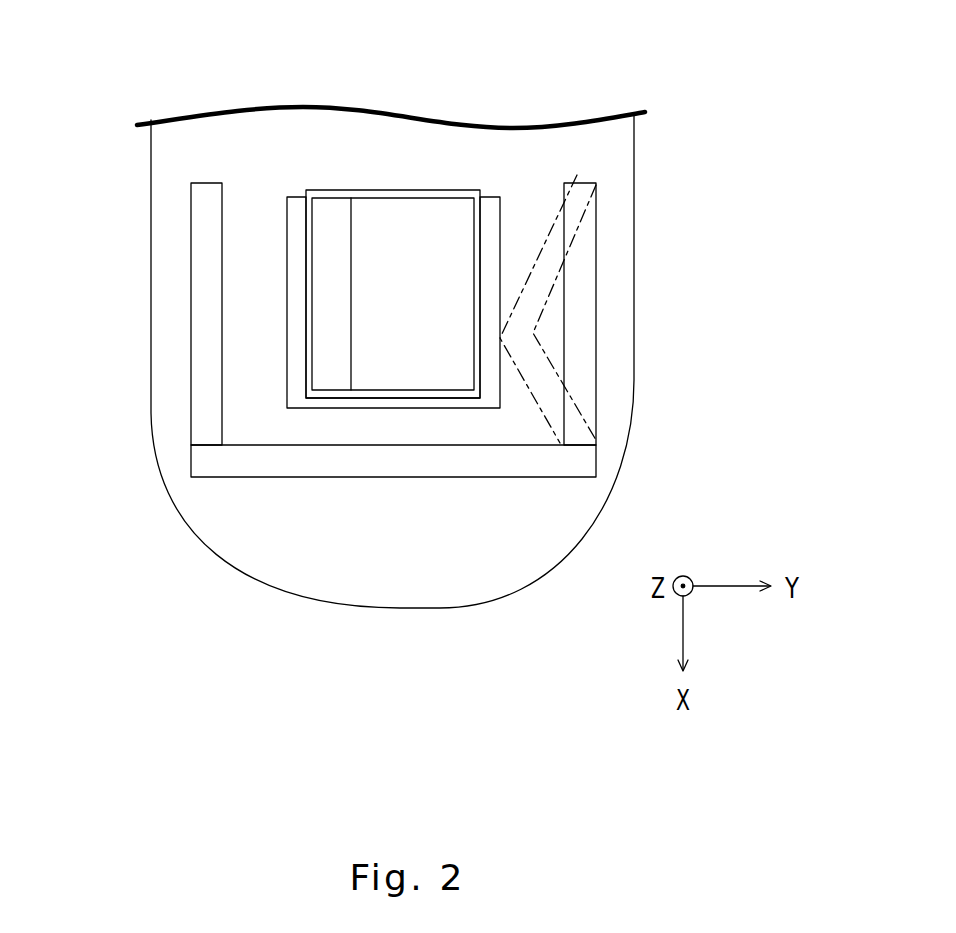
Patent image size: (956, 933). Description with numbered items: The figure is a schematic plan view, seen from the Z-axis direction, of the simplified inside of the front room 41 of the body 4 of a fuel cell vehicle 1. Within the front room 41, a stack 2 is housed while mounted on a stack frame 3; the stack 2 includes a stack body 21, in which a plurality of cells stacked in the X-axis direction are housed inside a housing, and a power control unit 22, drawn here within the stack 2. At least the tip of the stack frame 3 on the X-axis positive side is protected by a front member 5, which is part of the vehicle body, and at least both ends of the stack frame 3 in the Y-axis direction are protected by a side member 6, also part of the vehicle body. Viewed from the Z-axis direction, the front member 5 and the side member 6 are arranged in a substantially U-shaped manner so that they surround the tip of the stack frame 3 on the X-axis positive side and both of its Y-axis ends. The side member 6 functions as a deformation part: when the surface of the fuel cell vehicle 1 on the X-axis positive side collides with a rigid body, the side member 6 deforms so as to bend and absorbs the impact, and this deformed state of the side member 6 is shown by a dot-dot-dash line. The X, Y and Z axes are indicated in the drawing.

The fuel cell vehicle 1 is at (683, 42).
The stack 2 is at (393, 199).
The stack body 21 is at (459, 194).
The power control unit 22 is at (408, 213).
The stack frame 3 is at (297, 200).
The body 4 is at (634, 377).
The front room 41 is at (173, 343).
The front member 5 is at (391, 465).
The side member 6 is at (587, 304).